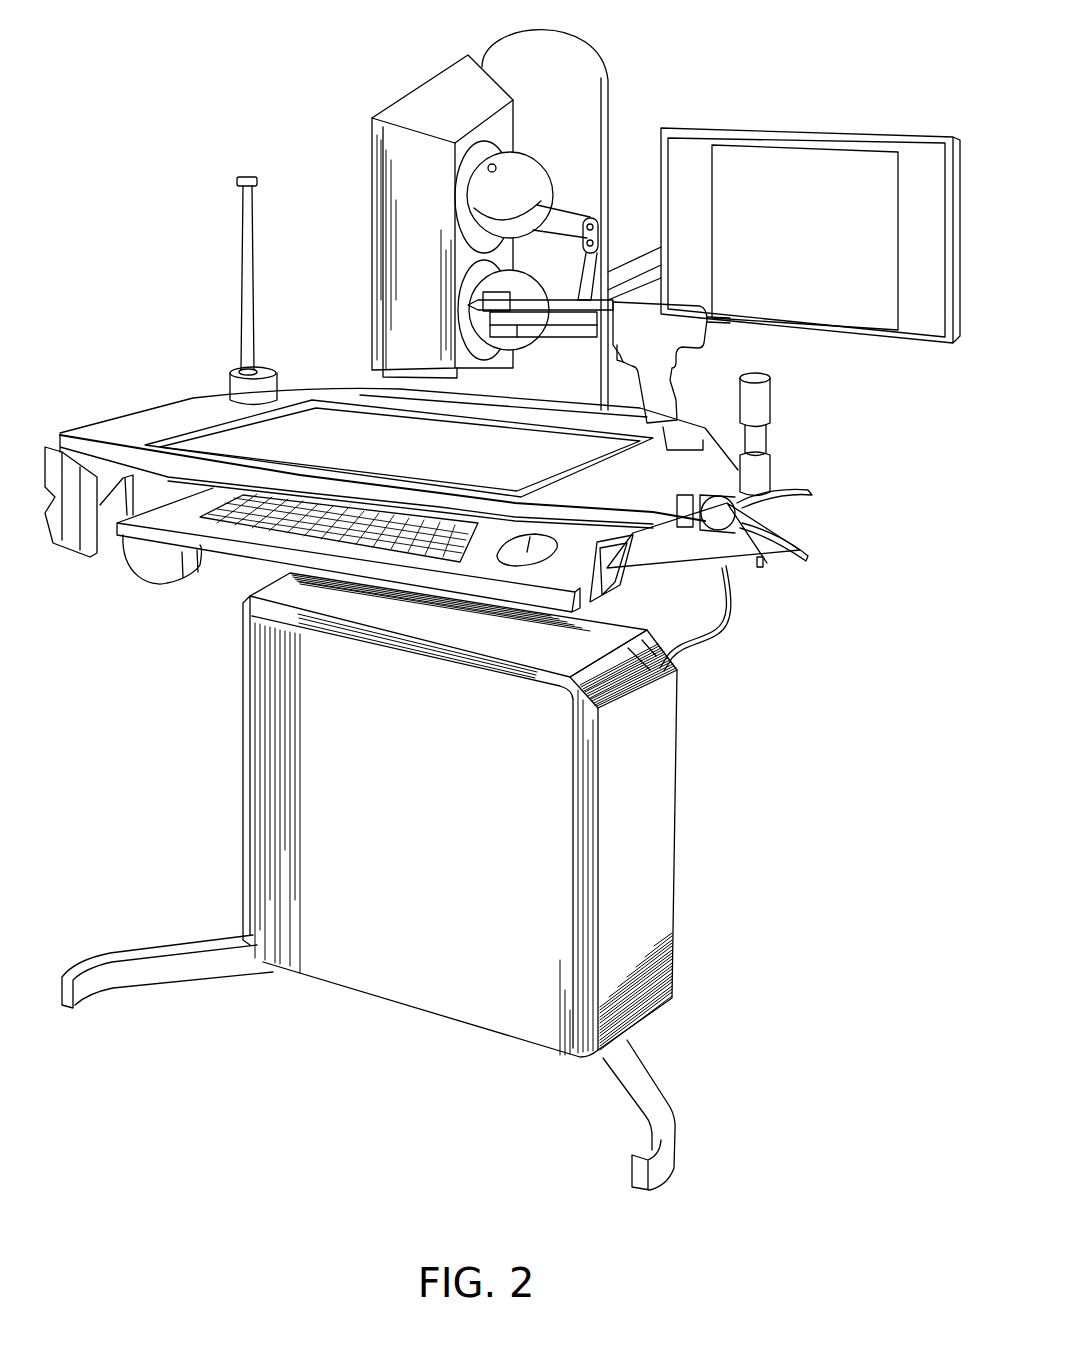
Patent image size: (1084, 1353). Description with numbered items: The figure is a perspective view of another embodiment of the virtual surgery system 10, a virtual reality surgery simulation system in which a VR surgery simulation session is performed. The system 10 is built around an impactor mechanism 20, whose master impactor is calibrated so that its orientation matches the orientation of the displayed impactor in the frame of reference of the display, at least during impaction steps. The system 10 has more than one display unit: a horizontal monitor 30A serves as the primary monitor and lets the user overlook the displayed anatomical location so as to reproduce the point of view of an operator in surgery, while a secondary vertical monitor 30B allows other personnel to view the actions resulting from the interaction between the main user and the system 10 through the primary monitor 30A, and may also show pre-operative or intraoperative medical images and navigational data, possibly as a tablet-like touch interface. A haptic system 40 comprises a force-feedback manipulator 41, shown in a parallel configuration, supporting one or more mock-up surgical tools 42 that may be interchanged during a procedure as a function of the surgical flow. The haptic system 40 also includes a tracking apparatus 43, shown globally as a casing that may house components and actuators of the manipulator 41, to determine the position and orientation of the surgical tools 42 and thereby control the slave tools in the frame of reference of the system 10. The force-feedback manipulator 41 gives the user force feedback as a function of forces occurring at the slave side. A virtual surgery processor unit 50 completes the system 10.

The virtual surgery system 10 is at (156, 180).
The impactor mechanism 20 is at (208, 280).
The horizontal monitor 30A is at (335, 427).
The secondary vertical monitor 30B is at (830, 132).
The haptic system 40 is at (822, 408).
The force-feedback manipulator 41 is at (577, 213).
The mock-up surgical tools 42 is at (663, 378).
The tracking apparatus 43 is at (397, 102).
The virtual surgery processor unit 50 is at (642, 800).